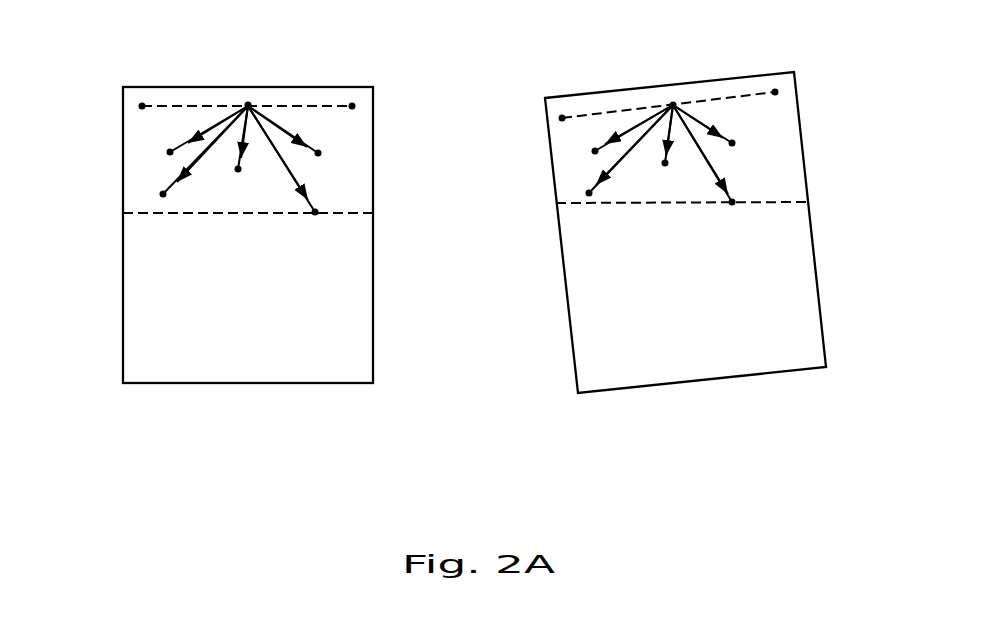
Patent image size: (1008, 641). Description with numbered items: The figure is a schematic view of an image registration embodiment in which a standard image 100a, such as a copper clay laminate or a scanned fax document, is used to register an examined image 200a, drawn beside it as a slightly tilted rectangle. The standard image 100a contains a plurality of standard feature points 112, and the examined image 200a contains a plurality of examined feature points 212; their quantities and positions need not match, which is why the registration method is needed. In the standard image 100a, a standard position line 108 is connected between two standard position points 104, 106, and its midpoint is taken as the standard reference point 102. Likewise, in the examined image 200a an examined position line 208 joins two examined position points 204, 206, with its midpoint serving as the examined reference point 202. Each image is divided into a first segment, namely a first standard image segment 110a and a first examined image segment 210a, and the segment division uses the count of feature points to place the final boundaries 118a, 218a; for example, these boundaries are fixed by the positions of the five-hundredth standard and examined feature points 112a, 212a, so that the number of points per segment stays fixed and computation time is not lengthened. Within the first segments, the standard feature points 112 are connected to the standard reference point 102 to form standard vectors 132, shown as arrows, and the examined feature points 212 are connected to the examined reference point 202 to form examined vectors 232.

The standard image 100a is at (88, 412).
The standard reference point 102 is at (248, 101).
The standard position point 104 is at (142, 102).
The standard position point 106 is at (352, 102).
The standard position line 108 is at (306, 104).
The first standard image segment 110a is at (140, 140).
The standard feature points 112 is at (170, 153).
The 500th standard feature point 112a is at (316, 213).
The final boundary 118a is at (353, 208).
The standard vectors 132 is at (288, 129).
The examined image 200a is at (542, 423).
The examined reference point 202 is at (673, 102).
The examined position point 204 is at (562, 115).
The examined position point 206 is at (775, 89).
The examined position line 208 is at (730, 96).
The first examined image segment 210a is at (778, 138).
The examined feature points 212 is at (732, 143).
The 500th examined feature point 212a is at (732, 202).
The final boundary 218a is at (782, 201).
The examined vectors 232 is at (702, 120).